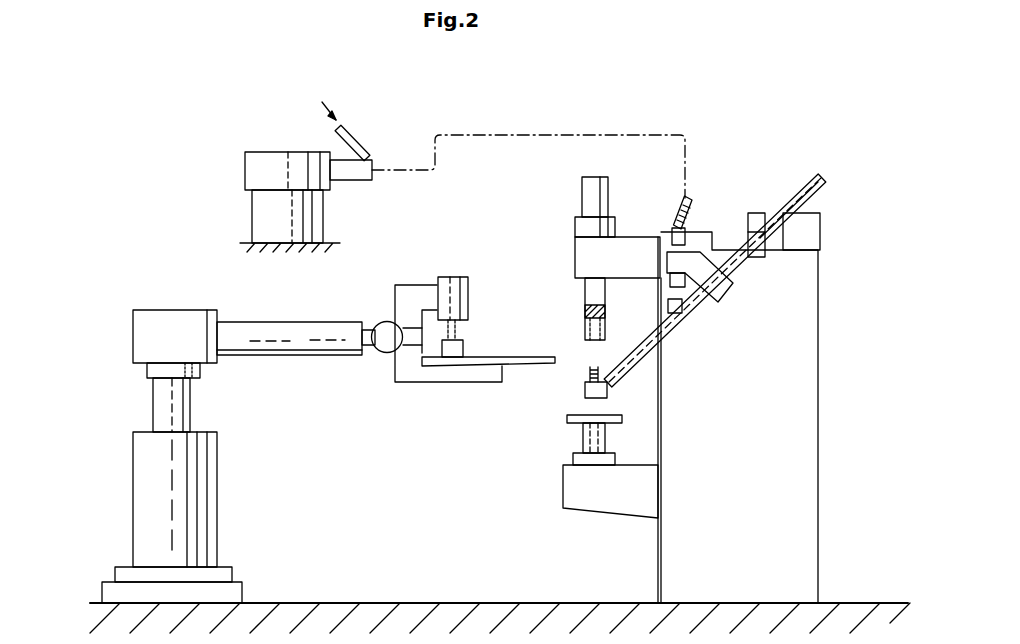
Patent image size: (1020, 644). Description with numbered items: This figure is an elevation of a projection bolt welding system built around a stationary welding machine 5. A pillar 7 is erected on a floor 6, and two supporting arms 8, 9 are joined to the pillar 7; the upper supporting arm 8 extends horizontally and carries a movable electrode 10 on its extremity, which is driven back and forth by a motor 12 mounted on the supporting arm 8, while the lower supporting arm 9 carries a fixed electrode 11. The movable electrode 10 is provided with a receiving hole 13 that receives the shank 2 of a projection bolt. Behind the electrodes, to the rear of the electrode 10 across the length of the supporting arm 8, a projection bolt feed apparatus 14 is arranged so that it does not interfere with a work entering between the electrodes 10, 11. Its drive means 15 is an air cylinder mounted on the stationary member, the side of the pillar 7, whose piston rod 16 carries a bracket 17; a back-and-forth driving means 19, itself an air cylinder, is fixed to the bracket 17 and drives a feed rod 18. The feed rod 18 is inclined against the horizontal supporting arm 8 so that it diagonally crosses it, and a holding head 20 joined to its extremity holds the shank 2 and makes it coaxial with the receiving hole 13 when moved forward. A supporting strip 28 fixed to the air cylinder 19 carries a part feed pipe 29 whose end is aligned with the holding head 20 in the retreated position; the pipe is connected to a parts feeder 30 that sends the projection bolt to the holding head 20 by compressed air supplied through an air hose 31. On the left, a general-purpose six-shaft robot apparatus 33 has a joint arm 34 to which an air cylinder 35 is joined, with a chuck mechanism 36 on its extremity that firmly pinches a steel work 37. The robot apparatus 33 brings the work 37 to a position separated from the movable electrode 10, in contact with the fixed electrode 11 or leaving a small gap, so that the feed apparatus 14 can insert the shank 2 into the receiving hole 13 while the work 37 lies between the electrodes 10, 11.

The shank 2 is at (590, 360).
The stationary welding machine 5 is at (825, 408).
The floor 6 is at (785, 603).
The pillar 7 is at (820, 305).
The supporting arm 8 is at (575, 245).
The supporting arm 9 is at (590, 512).
The movable electrode 10 is at (585, 295).
The fixed electrode 11 is at (583, 440).
The motor 12 is at (582, 195).
The receiving hole 13 is at (585, 340).
The projection bolt feed apparatus 14 is at (724, 325).
The drive means 15 is at (820, 232).
The piston rod 16 is at (760, 215).
The bracket 17 is at (752, 213).
The feed rod 18 is at (638, 362).
The back-and-forth driving means 19 is at (806, 175).
The holding head 20 is at (583, 392).
The supporting strip 28 is at (740, 300).
The part feed pipe 29 is at (686, 226).
The parts feeder 30 is at (265, 152).
The air hose 31 is at (362, 150).
The robot apparatus 33 is at (150, 296).
The joint arm 34 is at (186, 310).
The air cylinder 35 is at (290, 358).
The chuck mechanism 36 is at (416, 273).
The work 37 is at (490, 345).